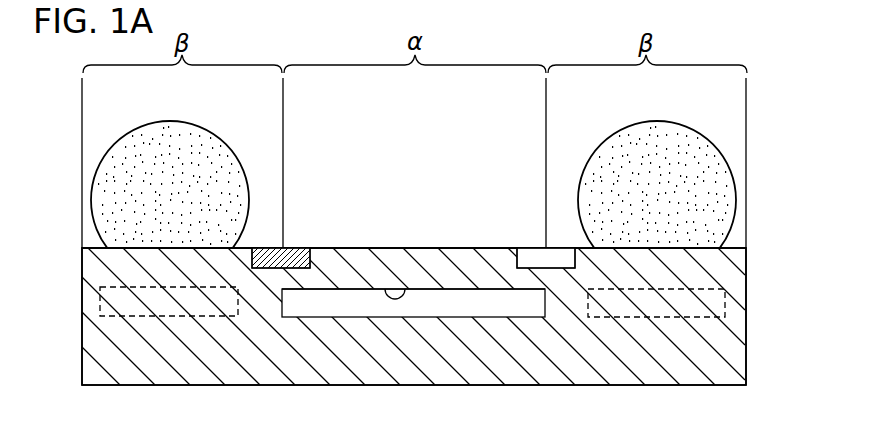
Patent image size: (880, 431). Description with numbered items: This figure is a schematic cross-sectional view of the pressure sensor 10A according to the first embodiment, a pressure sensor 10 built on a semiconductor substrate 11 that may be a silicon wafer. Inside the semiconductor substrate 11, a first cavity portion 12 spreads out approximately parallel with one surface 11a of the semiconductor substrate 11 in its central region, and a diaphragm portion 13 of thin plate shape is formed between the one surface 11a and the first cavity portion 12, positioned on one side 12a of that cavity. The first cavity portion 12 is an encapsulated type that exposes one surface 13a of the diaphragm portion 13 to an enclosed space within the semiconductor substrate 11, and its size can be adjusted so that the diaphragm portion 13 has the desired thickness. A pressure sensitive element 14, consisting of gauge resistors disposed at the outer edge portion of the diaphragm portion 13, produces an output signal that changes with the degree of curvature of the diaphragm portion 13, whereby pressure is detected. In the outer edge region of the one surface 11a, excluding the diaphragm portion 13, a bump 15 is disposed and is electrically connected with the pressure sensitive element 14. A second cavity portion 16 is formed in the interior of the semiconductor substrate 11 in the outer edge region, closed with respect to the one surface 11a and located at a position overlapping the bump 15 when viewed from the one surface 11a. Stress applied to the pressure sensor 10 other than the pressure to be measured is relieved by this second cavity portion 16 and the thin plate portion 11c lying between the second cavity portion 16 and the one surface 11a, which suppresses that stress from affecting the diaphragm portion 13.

The pressure sensor 10A is at (788, 78).
The pressure sensor 10 is at (833, 48).
The semiconductor substrate 11 is at (735, 337).
The one surface 11a is at (748, 247).
The thin plate portion 11c is at (150, 270).
The first cavity portion 12 is at (357, 303).
The one side of the first cavity portion 12a is at (482, 290).
The diaphragm portion 13 is at (444, 262).
The one surface of the diaphragm portion 13a is at (403, 289).
The pressure sensitive element 14 is at (297, 248).
The bump 15 is at (207, 143).
The second cavity portion 16 is at (98, 300).